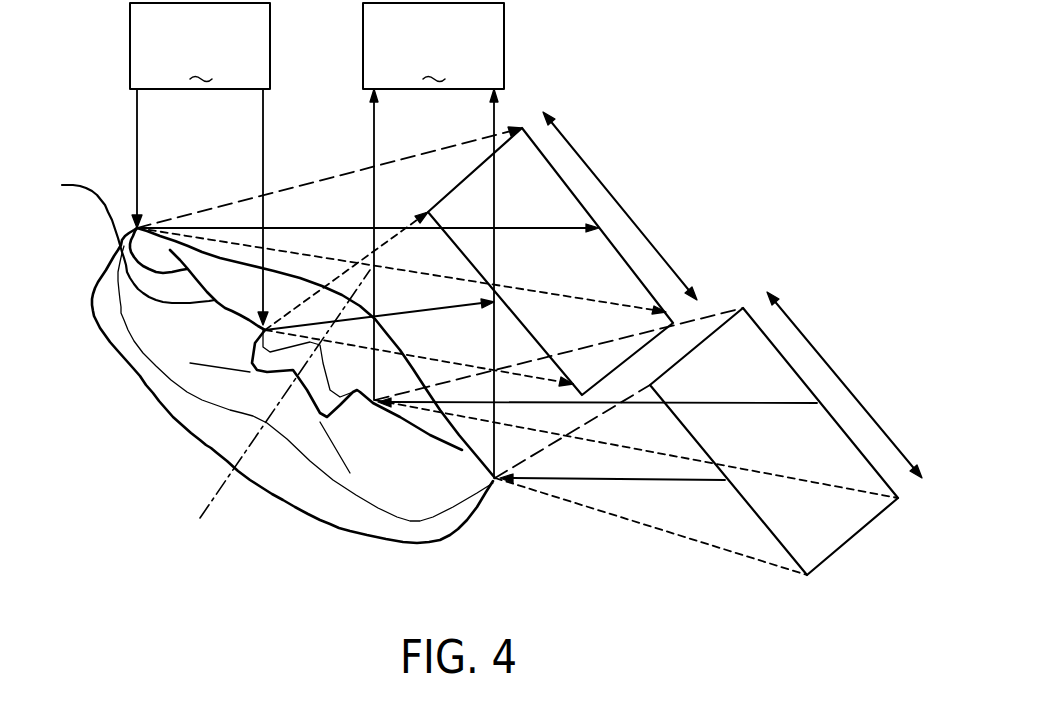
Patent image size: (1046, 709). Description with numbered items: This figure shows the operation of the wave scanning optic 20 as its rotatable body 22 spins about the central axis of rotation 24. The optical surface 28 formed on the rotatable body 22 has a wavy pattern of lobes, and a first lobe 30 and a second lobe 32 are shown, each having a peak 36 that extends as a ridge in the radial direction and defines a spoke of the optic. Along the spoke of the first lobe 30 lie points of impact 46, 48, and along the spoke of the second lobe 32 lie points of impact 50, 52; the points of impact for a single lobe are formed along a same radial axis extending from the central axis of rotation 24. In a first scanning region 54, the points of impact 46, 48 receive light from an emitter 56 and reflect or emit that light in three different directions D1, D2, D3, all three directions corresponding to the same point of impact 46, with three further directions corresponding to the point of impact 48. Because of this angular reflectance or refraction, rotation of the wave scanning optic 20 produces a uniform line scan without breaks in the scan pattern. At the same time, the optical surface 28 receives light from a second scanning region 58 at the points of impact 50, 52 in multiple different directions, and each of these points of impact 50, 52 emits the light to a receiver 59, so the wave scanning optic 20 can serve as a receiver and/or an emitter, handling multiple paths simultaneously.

The wave scanning optic 20 is at (120, 126).
The rotatable body 22 is at (165, 390).
The central axis of rotation 24 is at (245, 451).
The optical surface 28 is at (148, 320).
The first lobe 30 is at (122, 266).
The second lobe 32 is at (420, 437).
The peak 36 is at (122, 235).
The point of impact 46 is at (135, 225).
The point of impact 48 is at (268, 325).
The point of impact 50 is at (494, 482).
The point of impact 52 is at (376, 402).
The first scanning region 54 is at (618, 201).
The emitter 56 is at (200, 164).
The second scanning region 58 is at (843, 383).
The receiver 59 is at (433, 240).
The first direction D1 is at (350, 175).
The second direction D2 is at (577, 297).
The third direction D3 is at (517, 226).